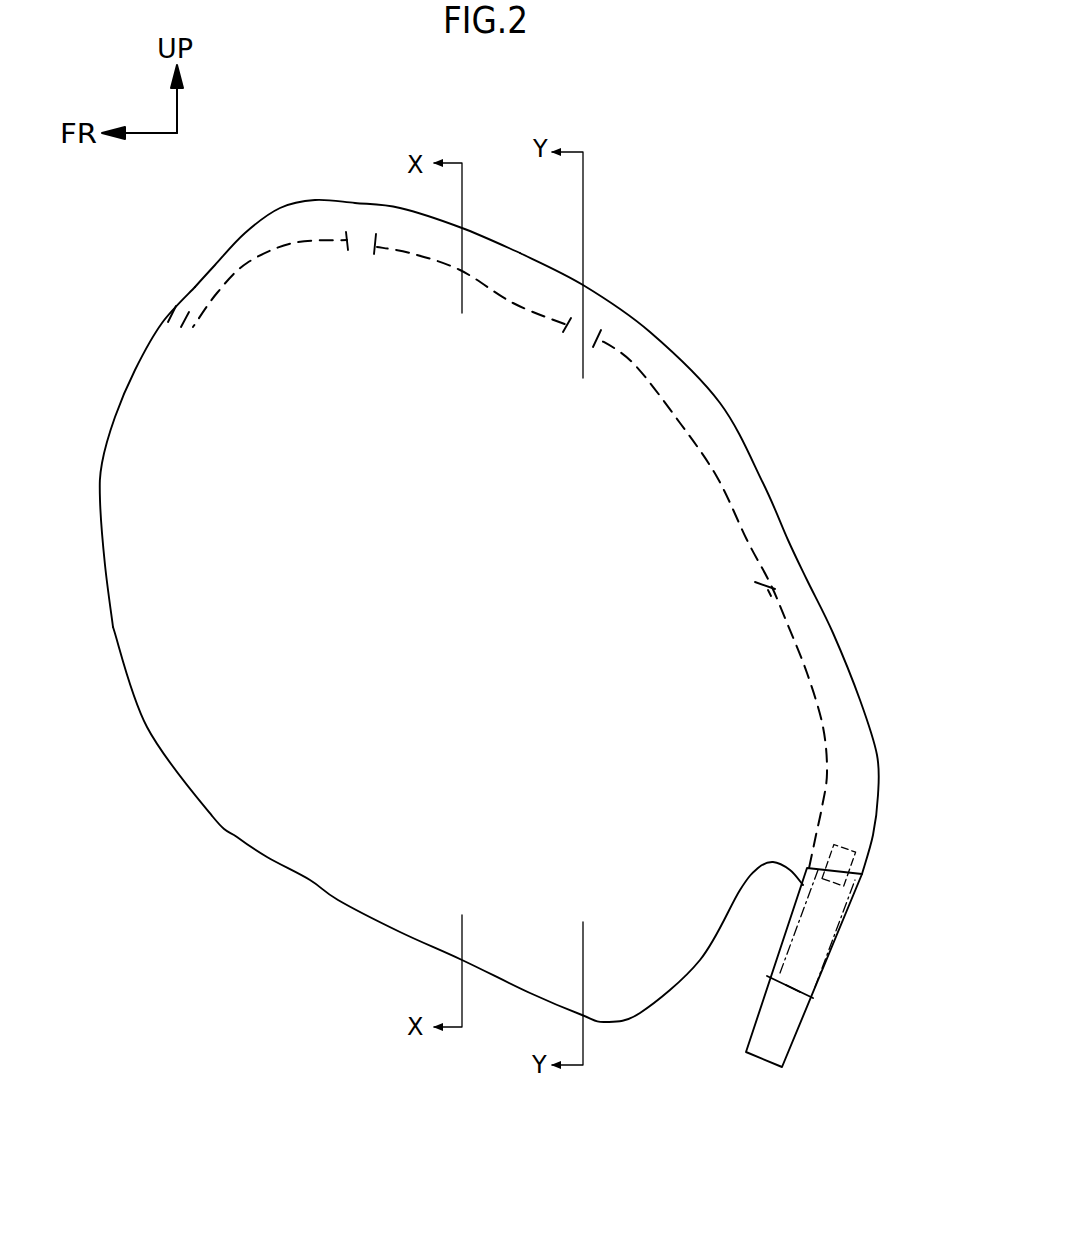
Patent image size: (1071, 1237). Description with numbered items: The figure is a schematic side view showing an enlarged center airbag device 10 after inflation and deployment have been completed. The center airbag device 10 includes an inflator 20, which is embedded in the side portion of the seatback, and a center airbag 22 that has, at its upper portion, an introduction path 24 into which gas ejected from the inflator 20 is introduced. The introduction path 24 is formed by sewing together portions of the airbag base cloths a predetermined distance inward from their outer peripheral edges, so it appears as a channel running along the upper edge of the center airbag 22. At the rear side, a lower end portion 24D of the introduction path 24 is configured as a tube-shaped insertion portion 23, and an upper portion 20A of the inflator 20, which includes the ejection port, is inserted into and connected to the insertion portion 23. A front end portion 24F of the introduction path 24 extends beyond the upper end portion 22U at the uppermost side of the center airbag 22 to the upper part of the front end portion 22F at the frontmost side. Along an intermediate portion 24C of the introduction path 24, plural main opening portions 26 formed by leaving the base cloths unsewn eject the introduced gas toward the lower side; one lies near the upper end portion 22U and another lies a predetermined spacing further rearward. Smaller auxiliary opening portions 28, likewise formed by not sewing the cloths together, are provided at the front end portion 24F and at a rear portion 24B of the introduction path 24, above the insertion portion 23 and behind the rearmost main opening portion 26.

The center airbag device 10 is at (667, 266).
The inflator 20 is at (845, 991).
The upper portion of the inflator 20A is at (853, 866).
The center airbag 22 is at (454, 553).
The upper end portion 22U is at (316, 200).
The front end portion 22F is at (100, 486).
The insertion portion 23 is at (793, 992).
The introduction path 24 is at (552, 630).
The front end portion of the introduction path 24F is at (193, 328).
The intermediate portion of the introduction path 24C is at (700, 413).
The rear portion of the introduction path 24B is at (813, 640).
The lower end portion of the introduction path 24D is at (807, 960).
The main opening portions 26 is at (375, 250).
The auxiliary opening portion 28 is at (176, 318).